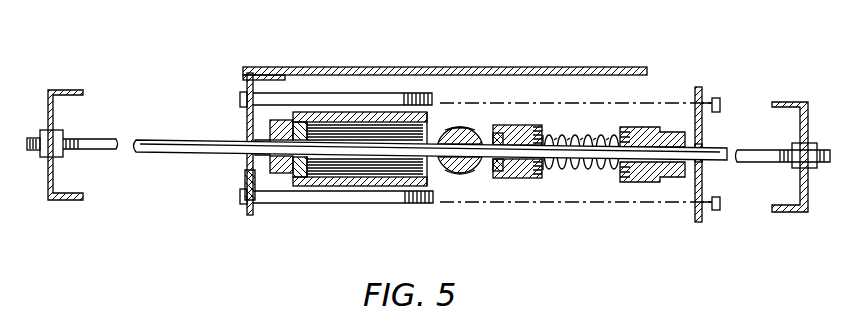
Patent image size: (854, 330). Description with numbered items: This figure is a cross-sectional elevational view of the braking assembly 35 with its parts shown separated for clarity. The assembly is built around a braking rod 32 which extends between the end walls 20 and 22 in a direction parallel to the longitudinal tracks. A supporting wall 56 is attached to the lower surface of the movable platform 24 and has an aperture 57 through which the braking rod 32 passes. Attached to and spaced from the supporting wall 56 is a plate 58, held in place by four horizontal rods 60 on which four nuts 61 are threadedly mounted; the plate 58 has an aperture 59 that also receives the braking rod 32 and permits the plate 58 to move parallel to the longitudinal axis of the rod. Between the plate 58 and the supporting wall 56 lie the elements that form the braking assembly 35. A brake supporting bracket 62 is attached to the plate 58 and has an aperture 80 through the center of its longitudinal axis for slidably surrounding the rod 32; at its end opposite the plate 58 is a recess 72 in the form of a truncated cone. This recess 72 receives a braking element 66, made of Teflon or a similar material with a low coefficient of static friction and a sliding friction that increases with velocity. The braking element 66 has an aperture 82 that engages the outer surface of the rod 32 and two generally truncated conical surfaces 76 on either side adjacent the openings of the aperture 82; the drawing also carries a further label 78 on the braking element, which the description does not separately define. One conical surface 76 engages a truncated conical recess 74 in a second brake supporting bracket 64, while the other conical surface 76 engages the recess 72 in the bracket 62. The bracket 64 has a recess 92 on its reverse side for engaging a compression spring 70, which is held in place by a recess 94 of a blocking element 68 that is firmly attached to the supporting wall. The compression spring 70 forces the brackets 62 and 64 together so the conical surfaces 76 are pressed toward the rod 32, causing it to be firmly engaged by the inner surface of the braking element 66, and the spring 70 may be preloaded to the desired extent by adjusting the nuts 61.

The end wall 20 is at (797, 101).
The end wall 22 is at (70, 90).
The movable platform 24 is at (400, 67).
The braking rod 32 is at (168, 139).
The braking assembly 35 is at (612, 222).
The supporting wall 56 is at (246, 178).
The aperture 57 is at (247, 118).
The plate 58 is at (703, 185).
The aperture 59 is at (702, 140).
The horizontal rod 60 is at (316, 100).
The nut 61 is at (720, 101).
The brake supporting bracket 62 is at (288, 172).
The brake supporting bracket 64 is at (523, 180).
The braking element 66 is at (480, 122).
The blocking element 68 is at (620, 176).
The compression spring 70 is at (562, 137).
The recess 72 is at (307, 164).
The truncated conical recess 74 is at (491, 168).
The truncated conical surface 76 is at (440, 180).
The ball 78 is at (458, 127).
The aperture 80 is at (268, 149).
The aperture 82 is at (455, 118).
The recess 92 is at (545, 168).
The recess 94 is at (609, 128).